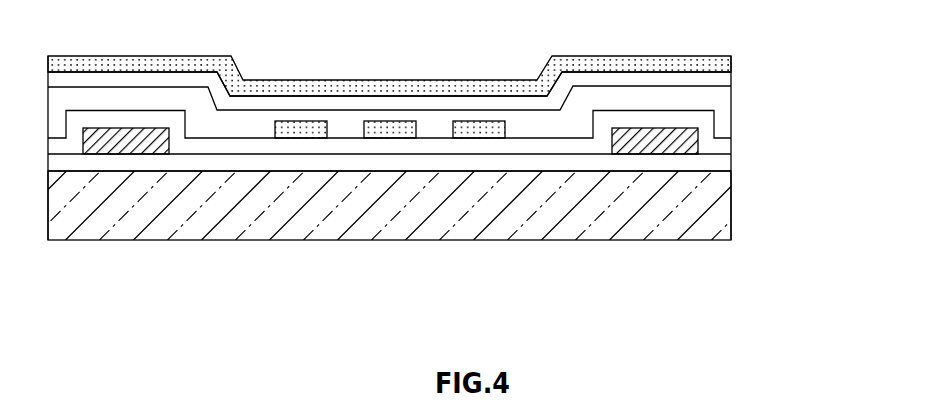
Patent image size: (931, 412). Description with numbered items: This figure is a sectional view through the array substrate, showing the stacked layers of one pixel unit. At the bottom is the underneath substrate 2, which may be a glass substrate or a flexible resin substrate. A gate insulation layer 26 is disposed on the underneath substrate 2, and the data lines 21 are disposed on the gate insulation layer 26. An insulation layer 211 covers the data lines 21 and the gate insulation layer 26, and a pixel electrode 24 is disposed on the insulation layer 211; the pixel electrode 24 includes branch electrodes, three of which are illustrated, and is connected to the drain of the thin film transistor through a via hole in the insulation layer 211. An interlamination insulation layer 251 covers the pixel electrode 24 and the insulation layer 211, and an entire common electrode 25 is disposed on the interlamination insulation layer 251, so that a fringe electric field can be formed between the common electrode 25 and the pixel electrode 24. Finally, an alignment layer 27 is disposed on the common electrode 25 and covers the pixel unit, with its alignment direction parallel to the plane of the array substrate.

The underneath substrate 2 is at (713, 224).
The data lines 21 is at (130, 150).
The insulation layer 211 is at (213, 148).
The pixel electrode 24 is at (495, 127).
The common electrode 25 is at (328, 97).
The interlamination insulation layer 251 is at (714, 96).
The gate insulation layer 26 is at (708, 163).
The alignment layer 27 is at (731, 63).